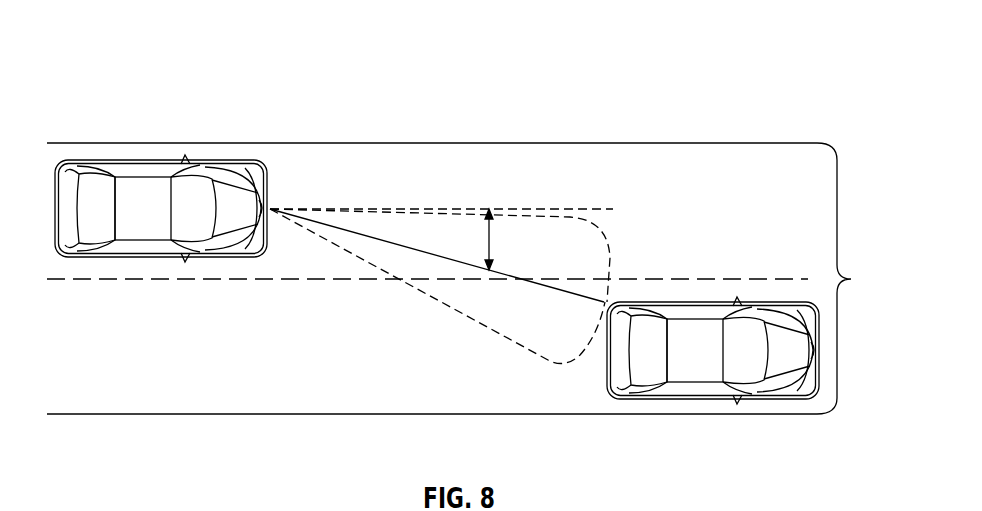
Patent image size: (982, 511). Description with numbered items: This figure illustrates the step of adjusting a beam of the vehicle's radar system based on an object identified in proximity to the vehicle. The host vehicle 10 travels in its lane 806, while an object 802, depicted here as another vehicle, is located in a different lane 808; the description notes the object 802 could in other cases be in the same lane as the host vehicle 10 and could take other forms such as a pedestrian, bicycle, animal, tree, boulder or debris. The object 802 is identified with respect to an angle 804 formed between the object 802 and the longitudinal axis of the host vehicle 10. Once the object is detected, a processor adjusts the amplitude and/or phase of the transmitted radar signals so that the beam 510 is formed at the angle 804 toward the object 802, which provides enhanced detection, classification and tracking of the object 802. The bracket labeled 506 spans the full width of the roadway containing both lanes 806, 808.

The host vehicle 10 is at (155, 163).
The object 802 is at (690, 400).
The angle 804 is at (491, 237).
The beam 510 is at (612, 258).
The lane 806 is at (768, 223).
The lane 808 is at (413, 358).
The road 506 is at (856, 278).